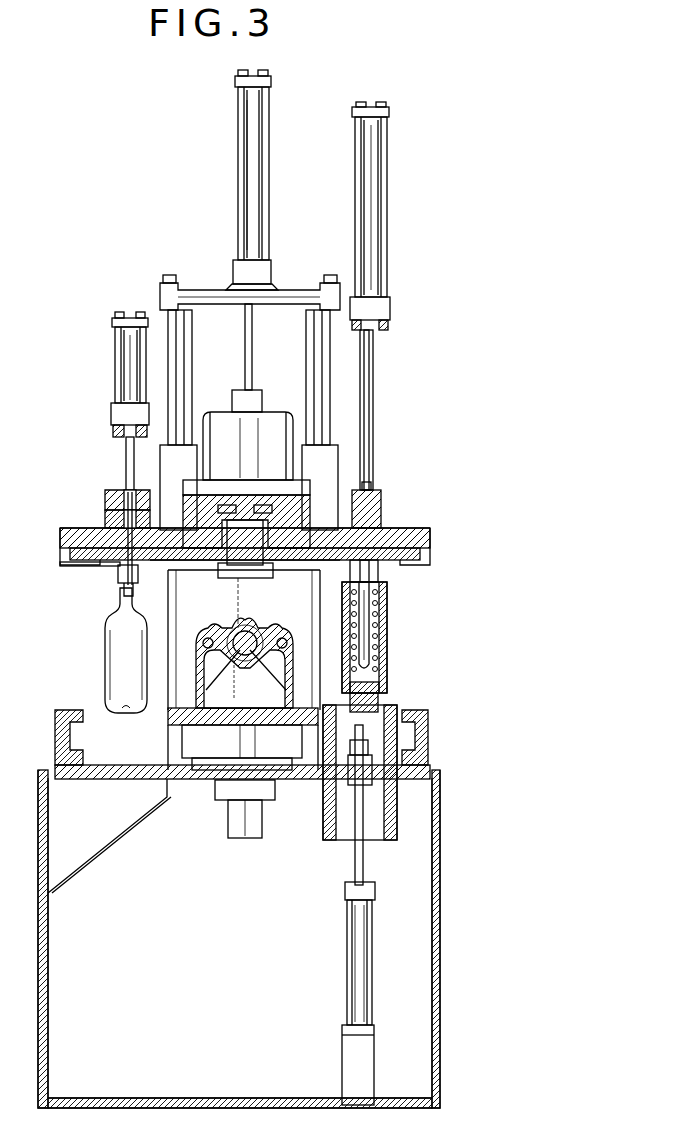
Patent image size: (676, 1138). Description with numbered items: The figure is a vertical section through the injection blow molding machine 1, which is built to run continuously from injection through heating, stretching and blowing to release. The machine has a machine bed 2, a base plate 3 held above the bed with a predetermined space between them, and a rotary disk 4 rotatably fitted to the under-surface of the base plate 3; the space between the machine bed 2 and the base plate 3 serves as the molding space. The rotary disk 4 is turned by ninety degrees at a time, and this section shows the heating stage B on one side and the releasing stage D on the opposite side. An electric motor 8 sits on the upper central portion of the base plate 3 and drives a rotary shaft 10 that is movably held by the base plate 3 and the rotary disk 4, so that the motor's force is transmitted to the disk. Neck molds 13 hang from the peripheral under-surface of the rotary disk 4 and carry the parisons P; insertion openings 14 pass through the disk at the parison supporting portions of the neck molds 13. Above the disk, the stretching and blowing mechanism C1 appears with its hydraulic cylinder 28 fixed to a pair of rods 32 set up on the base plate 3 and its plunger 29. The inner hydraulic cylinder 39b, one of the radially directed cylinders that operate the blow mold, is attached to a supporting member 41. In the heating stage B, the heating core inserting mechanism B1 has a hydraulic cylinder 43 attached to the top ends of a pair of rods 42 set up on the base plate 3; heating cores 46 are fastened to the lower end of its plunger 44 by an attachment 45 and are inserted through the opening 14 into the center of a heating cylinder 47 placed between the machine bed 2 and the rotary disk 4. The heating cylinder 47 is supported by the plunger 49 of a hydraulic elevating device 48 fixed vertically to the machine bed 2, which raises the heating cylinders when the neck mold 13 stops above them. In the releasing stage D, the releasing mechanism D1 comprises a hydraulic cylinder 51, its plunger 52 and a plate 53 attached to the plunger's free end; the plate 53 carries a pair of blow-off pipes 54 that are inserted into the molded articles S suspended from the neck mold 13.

The molding machine 1 is at (405, 498).
The machine bed 2 is at (200, 790).
The base plate 3 is at (415, 540).
The rotary disk 4 is at (425, 562).
The electric motor 8 is at (270, 420).
The rotary shaft 10 is at (262, 562).
The neck molds 13 is at (120, 578).
The insertion openings 14 is at (380, 580).
The hydraulic cylinder 28 is at (250, 186).
The plunger 29 is at (246, 328).
The pair of rods 32 is at (180, 380).
The inner hydraulic cylinder 39b is at (248, 625).
The supporting member 41 is at (200, 663).
The pair of rods 42 is at (375, 357).
The hydraulic cylinder 43 is at (378, 222).
The plunger 44 is at (370, 390).
The attachment 45 is at (380, 505).
The heating cores 46 is at (356, 622).
The heating cylinder 47 is at (388, 632).
The hydraulic elevating device 48 is at (356, 966).
The plunger 49 is at (356, 860).
The hydraulic cylinder 51 is at (126, 382).
The plunger 52 is at (128, 452).
The plate 53 is at (108, 490).
The blow-off pipes 54 is at (110, 518).
The heating stage B is at (425, 650).
The heating core inserting mechanism B1 is at (358, 198).
The stretching and blowing mechanism C1 is at (238, 165).
The releasing stage D is at (76, 650).
The releasing mechanism D1 is at (112, 376).
The parisons P is at (368, 662).
The molded articles S is at (105, 668).